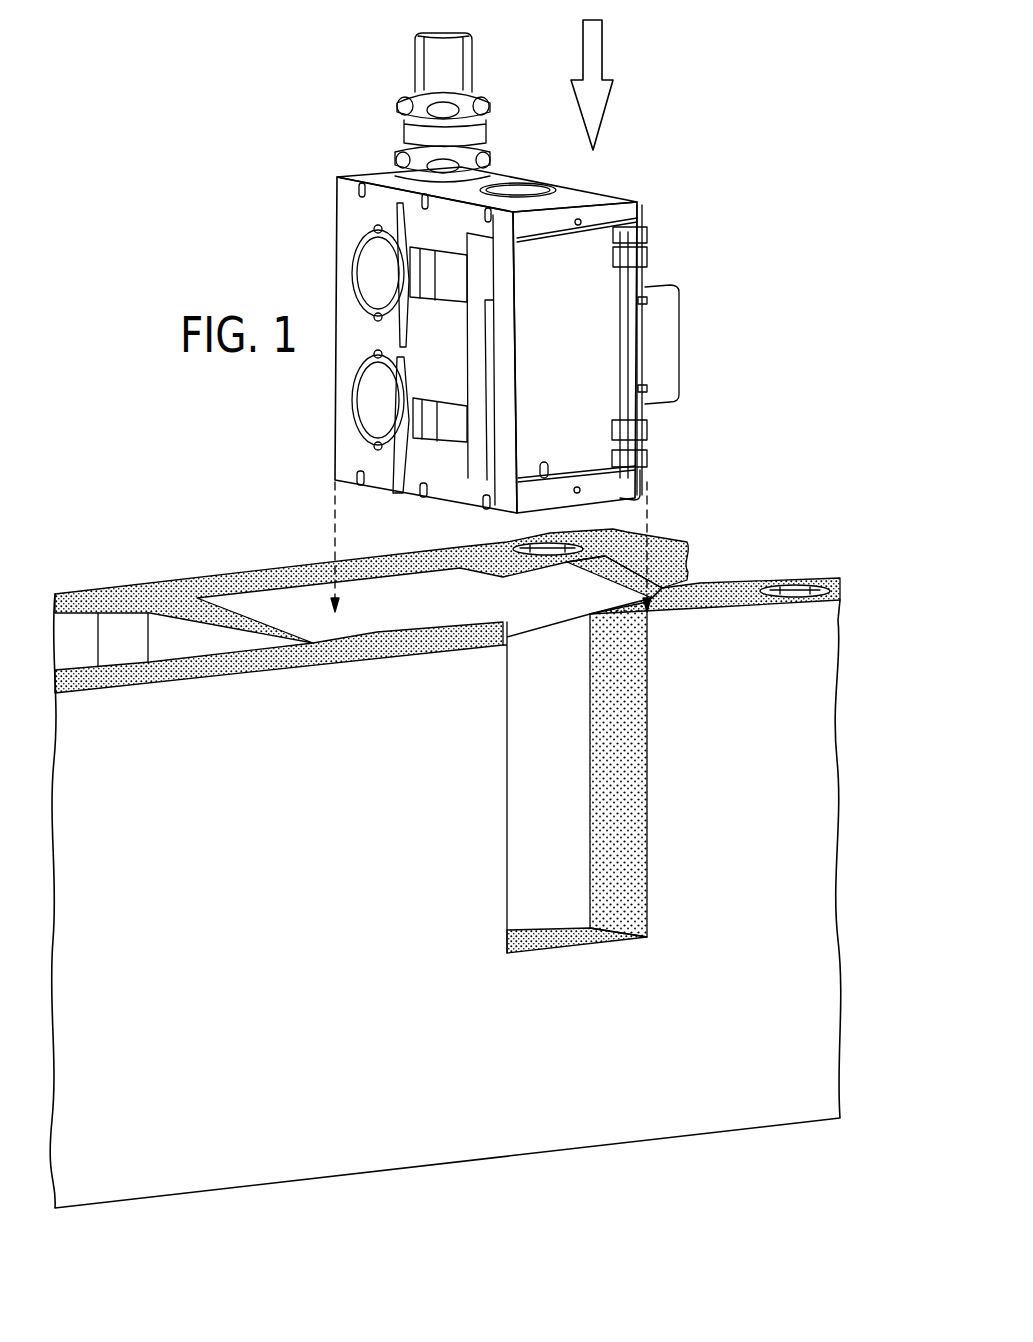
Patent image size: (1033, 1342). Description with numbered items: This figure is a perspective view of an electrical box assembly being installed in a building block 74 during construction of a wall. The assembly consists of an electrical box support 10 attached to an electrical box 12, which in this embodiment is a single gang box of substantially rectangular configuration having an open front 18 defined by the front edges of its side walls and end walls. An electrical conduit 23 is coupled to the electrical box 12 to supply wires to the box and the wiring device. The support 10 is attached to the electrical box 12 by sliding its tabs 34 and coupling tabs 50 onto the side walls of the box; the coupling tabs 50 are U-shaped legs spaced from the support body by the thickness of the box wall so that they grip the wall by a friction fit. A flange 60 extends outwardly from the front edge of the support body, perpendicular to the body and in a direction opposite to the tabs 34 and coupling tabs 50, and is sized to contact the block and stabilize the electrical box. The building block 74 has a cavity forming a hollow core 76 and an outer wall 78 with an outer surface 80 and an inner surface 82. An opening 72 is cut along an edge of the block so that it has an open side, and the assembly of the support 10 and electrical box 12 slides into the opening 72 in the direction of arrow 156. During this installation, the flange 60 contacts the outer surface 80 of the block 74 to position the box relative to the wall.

The electrical box support 10 is at (537, 289).
The electrical box 12 is at (549, 297).
The open front 18 is at (593, 295).
The electrical conduit 23 is at (413, 60).
The tabs 34 is at (630, 483).
The coupling tab 50 is at (640, 413).
The flange 60 is at (665, 370).
The opening 72 is at (508, 735).
The building block 74 is at (371, 557).
The hollow core 76 is at (287, 612).
The outer wall 78 is at (715, 556).
The outer surface 80 is at (780, 630).
The inner surface 82 is at (417, 620).
The arrow 156 is at (600, 56).